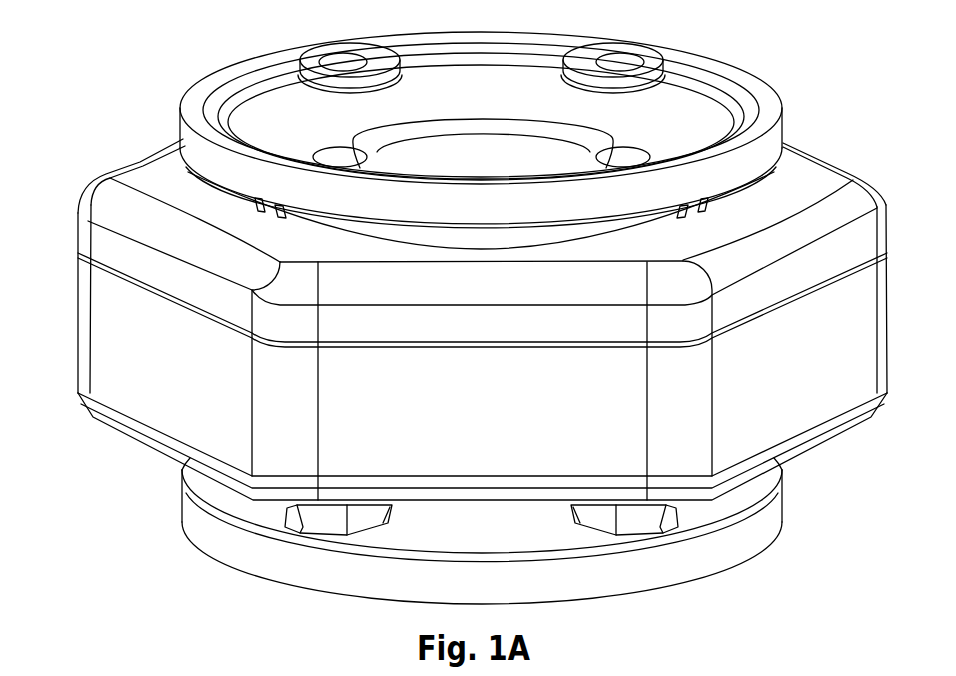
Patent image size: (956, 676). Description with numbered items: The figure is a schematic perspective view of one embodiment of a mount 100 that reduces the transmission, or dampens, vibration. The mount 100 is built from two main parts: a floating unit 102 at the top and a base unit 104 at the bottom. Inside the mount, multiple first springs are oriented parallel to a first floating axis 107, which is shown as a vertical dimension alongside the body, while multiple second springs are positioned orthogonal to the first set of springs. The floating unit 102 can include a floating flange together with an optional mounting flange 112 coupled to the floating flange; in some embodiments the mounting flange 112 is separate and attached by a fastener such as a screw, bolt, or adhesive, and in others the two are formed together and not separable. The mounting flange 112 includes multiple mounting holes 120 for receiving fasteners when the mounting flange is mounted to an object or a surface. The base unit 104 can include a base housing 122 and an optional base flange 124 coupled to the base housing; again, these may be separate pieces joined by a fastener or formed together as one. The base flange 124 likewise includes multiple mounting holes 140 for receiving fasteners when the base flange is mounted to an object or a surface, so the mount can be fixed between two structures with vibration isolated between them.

The mount 100 is at (860, 84).
The floating unit 102 is at (763, 98).
The base unit 104 is at (212, 547).
The first floating axis 107 is at (47, 160).
The mounting flange 112 is at (667, 57).
The mounting holes 120 is at (337, 62).
The base housing 122 is at (795, 168).
The base flange 124 is at (263, 568).
The mounting holes 140 is at (325, 522).